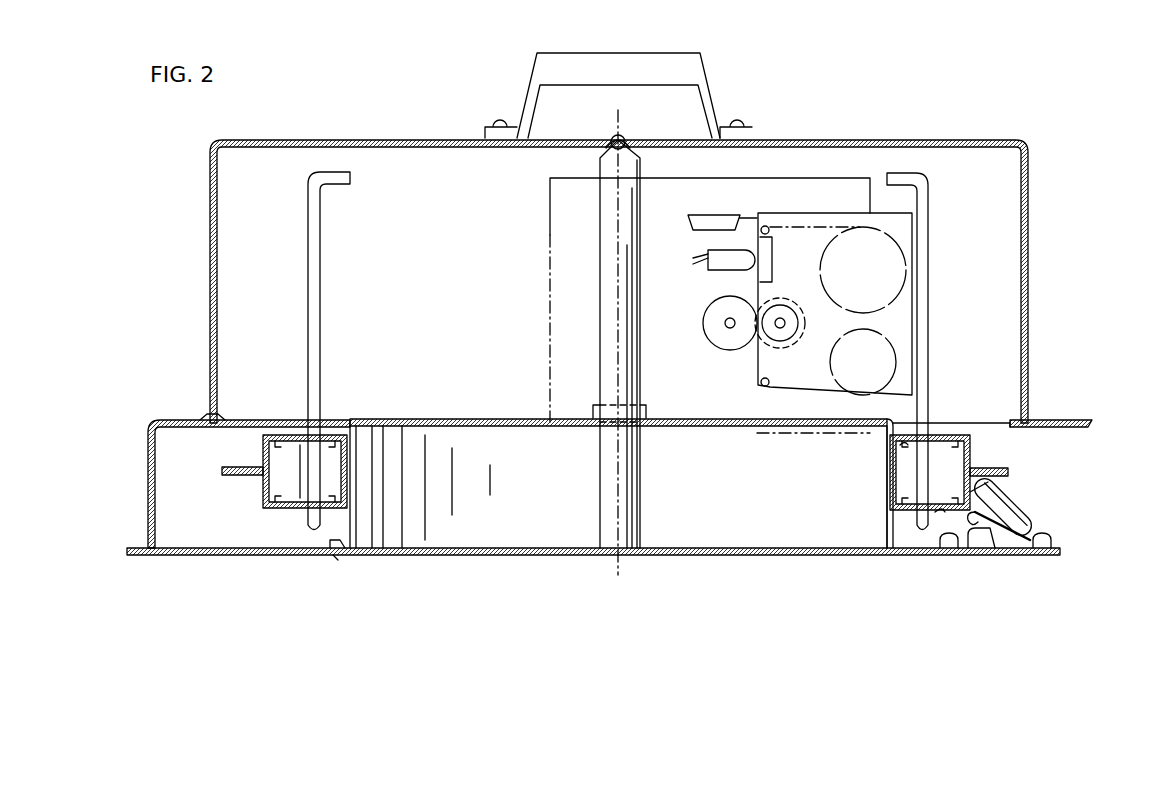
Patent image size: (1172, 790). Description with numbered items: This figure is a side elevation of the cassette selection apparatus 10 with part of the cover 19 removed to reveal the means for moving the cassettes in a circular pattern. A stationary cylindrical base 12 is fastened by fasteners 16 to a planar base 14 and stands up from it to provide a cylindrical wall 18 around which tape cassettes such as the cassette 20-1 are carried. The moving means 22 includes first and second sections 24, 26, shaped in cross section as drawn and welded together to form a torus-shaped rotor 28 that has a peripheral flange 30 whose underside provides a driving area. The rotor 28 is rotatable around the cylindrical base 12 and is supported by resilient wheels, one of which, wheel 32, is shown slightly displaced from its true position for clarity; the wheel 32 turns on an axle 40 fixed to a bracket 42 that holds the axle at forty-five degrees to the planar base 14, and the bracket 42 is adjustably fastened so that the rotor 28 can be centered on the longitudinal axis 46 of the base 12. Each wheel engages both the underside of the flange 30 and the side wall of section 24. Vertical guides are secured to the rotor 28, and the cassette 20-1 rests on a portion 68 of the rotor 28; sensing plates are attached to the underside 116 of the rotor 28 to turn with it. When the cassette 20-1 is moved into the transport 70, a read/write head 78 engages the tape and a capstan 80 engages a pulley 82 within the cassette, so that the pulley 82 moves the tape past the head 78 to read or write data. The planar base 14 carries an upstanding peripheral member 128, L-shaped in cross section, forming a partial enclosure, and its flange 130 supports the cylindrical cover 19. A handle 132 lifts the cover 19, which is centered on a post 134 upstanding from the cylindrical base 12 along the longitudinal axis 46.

The apparatus 10 is at (1050, 184).
The cylindrical base 12 is at (455, 412).
The planar base 14 is at (693, 556).
The fasteners 16 is at (893, 555).
The cylindrical wall 18 is at (345, 474).
The cover 19 is at (208, 208).
The cassette 20-1 is at (798, 215).
The moving means 22 is at (943, 414).
The first section 24 is at (290, 508).
The second section 26 is at (287, 435).
The rotor 28 is at (962, 454).
The peripheral flange 30 is at (1008, 472).
The resilient wheel 32 is at (1032, 532).
The axle 40 is at (1014, 498).
The bracket 42 is at (985, 552).
The longitudinal axis 46 is at (618, 316).
The portion of the rotor 68 is at (900, 445).
The transport 70 is at (546, 240).
The read/write head 78 is at (726, 248).
The capstan 80 is at (742, 302).
The pulley 82 is at (790, 352).
The underside of the rotor 116 is at (942, 511).
The peripheral member 128 is at (146, 488).
The flange 130 is at (205, 418).
The handle 132 is at (535, 62).
The post 134 is at (600, 172).